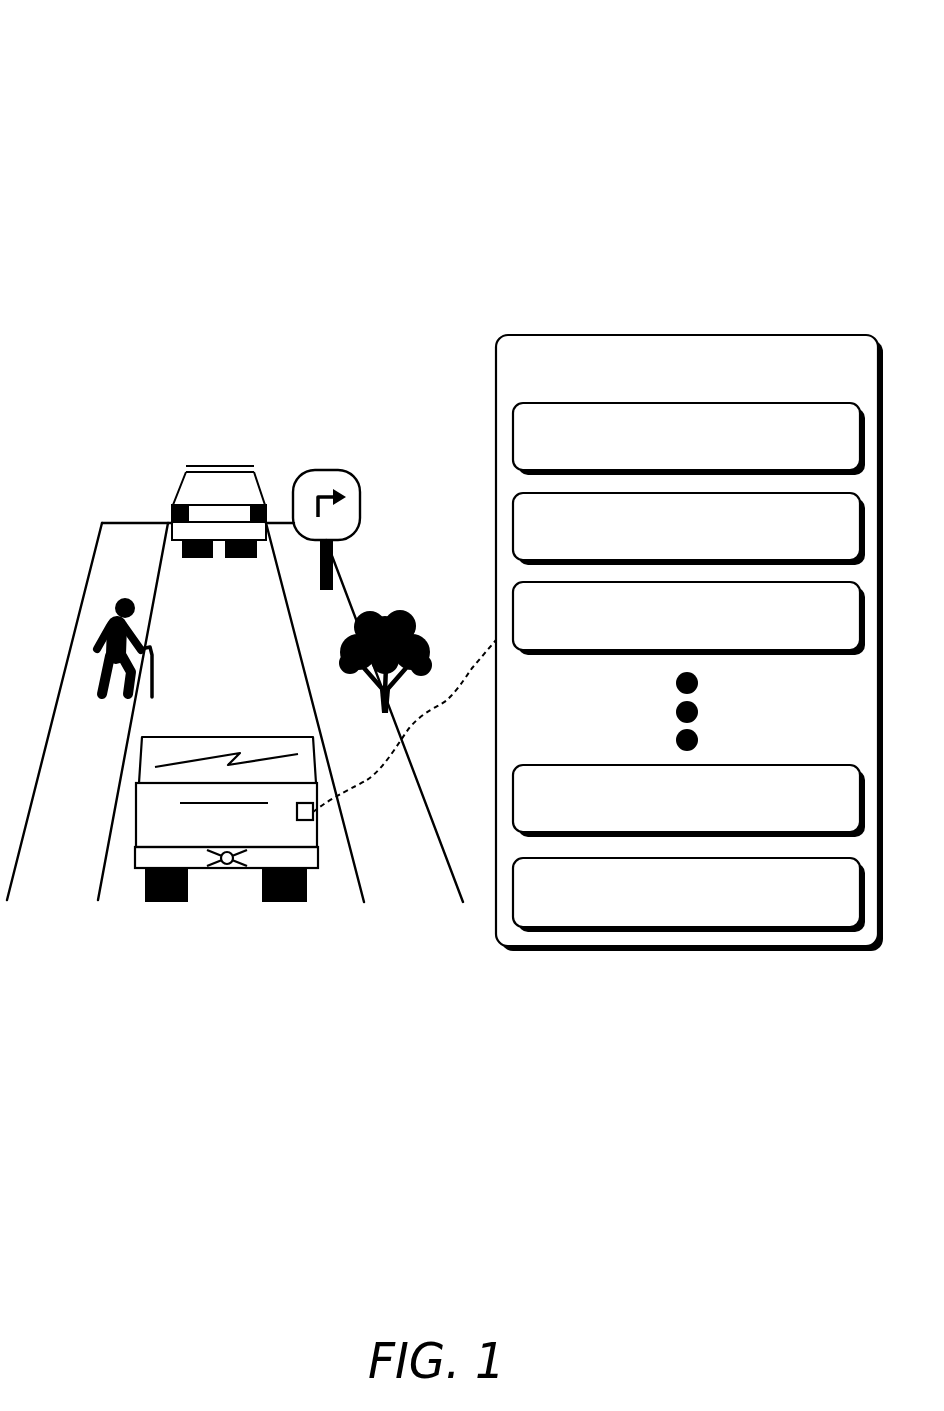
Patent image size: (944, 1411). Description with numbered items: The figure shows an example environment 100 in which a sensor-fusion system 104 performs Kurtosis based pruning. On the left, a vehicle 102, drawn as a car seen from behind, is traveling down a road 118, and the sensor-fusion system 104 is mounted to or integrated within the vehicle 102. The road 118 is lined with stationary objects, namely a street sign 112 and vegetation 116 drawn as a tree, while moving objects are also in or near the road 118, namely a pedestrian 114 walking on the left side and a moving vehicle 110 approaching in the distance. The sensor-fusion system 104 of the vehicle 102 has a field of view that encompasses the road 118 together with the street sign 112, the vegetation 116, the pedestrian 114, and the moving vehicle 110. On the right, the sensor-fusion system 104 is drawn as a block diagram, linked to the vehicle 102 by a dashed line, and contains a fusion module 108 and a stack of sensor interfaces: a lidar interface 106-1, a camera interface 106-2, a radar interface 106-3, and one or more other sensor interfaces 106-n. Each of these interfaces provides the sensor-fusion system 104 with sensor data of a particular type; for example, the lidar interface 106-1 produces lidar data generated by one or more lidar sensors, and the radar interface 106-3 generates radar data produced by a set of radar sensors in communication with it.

The environment 100 is at (96, 42).
The vehicle 102 is at (137, 797).
The sensor-fusion system 104 is at (703, 393).
The lidar interface 106-1 is at (712, 461).
The camera interface 106-2 is at (712, 551).
The radar interface 106-3 is at (712, 640).
The other sensor interface 106-n is at (712, 825).
The fusion module 108 is at (703, 918).
The moving vehicle 110 is at (253, 466).
The street sign 112 is at (330, 470).
The pedestrian 114 is at (100, 625).
The vegetation 116 is at (418, 634).
The road 118 is at (243, 642).